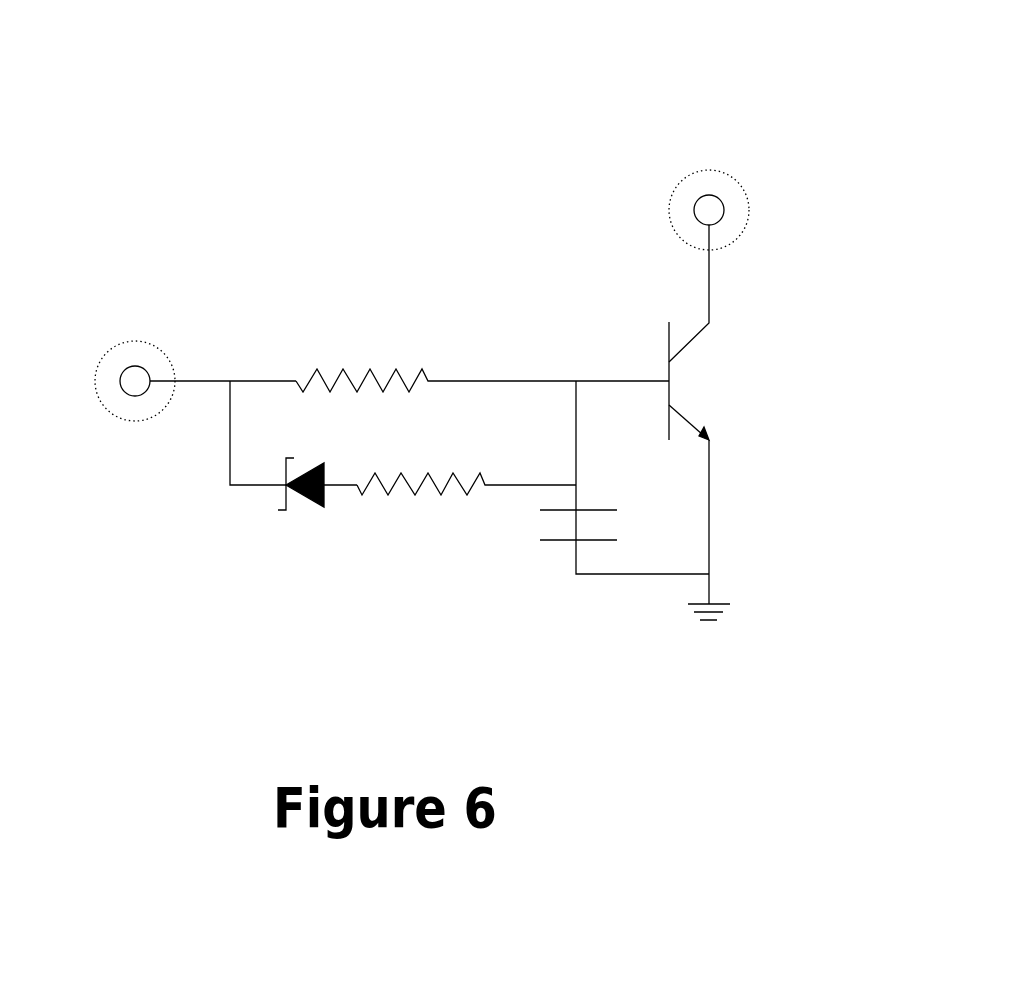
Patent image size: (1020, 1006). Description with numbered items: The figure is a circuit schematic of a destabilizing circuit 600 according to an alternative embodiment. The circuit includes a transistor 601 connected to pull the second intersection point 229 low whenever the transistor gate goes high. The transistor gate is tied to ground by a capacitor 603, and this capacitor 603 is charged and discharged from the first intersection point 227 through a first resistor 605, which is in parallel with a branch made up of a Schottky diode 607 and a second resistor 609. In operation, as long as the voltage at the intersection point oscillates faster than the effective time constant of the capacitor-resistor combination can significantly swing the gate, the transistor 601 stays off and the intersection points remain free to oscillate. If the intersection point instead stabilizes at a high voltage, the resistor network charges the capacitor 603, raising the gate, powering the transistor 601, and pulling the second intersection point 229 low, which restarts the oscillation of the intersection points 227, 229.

The destabilizing circuit 600 is at (664, 104).
The first intersection point 227 is at (108, 411).
The second intersection point 229 is at (742, 236).
The transistor 601 is at (678, 387).
The capacitor 603 is at (557, 542).
The first resistor 605 is at (372, 370).
The Schottky diode 607 is at (283, 512).
The second resistor 609 is at (415, 490).